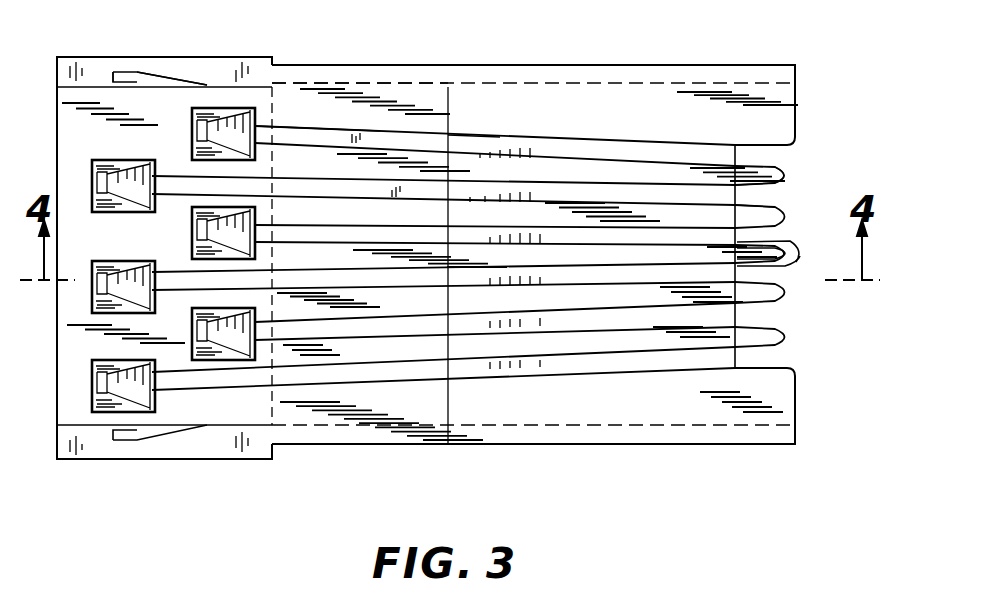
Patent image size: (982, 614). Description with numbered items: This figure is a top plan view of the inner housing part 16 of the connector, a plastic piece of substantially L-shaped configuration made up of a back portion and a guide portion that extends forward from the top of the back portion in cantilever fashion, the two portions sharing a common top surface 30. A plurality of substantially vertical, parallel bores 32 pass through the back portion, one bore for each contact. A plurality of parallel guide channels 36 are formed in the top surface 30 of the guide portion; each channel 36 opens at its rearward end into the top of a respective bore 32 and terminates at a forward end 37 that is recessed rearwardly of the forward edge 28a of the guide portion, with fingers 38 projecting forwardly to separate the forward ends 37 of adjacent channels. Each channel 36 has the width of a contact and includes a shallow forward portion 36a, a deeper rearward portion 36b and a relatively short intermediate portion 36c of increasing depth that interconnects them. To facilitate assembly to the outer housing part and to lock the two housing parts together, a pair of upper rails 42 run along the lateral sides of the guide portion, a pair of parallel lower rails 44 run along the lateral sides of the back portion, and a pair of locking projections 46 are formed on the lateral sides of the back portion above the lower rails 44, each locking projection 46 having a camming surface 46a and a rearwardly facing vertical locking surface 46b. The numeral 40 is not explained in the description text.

The inner housing part 16 is at (441, 52).
The forward edge 28a is at (795, 111).
The top surface 30 is at (328, 115).
The bores 32 is at (100, 160).
The guide channels 36 is at (497, 225).
The forward channel portion 36a is at (713, 157).
The rearward channel portion 36b is at (380, 140).
The intermediate channel portion 36c is at (476, 139).
The forward end 37 is at (800, 258).
The fingers 38 is at (794, 177).
The slot 40 is at (788, 200).
The upper rails 42 is at (603, 66).
The lower rails 44 is at (250, 62).
The locking projections 46 is at (145, 80).
The camming surface 46a is at (178, 80).
The locking surface 46b is at (116, 82).